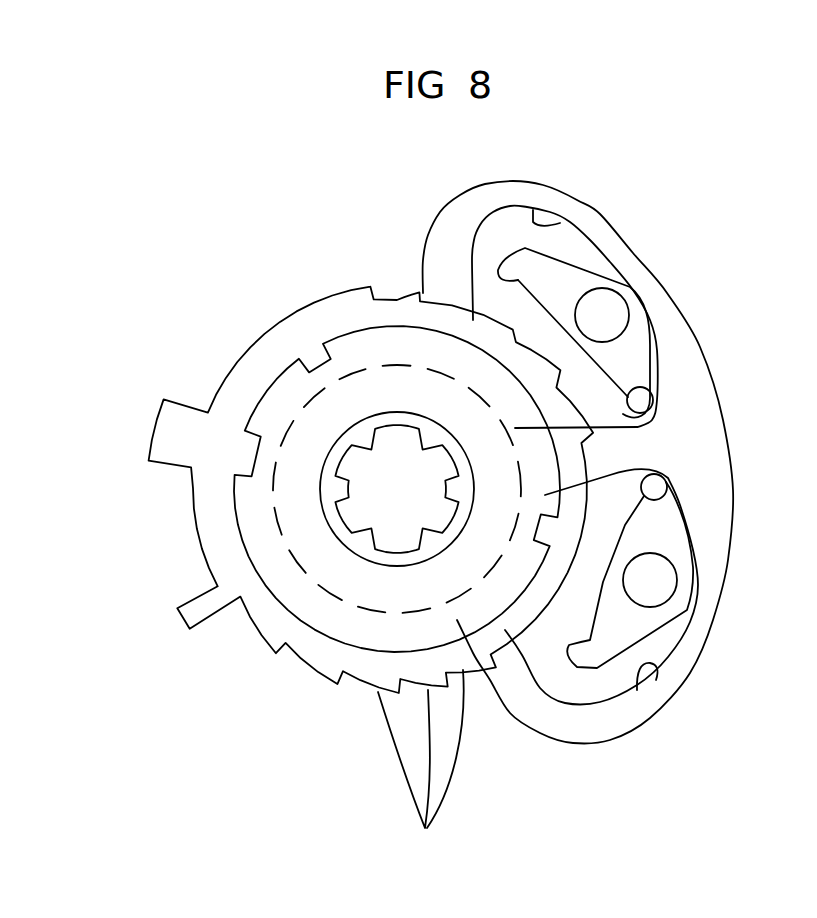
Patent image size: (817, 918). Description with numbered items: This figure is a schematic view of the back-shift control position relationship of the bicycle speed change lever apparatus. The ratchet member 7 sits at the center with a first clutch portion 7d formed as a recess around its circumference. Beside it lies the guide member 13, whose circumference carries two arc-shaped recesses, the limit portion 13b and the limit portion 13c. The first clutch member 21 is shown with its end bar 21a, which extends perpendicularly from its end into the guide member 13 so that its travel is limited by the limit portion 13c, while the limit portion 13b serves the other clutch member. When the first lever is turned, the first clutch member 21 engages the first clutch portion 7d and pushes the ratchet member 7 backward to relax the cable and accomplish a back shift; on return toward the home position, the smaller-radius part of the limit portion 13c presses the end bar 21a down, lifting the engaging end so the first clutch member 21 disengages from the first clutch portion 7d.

The ratchet member 7 is at (280, 333).
The first clutch portion 7d is at (421, 771).
The guide member 13 is at (687, 370).
The limit portion 13b is at (545, 224).
The limit portion 13c is at (637, 690).
The first clutch member 21 is at (593, 650).
The end bar 21a is at (667, 483).